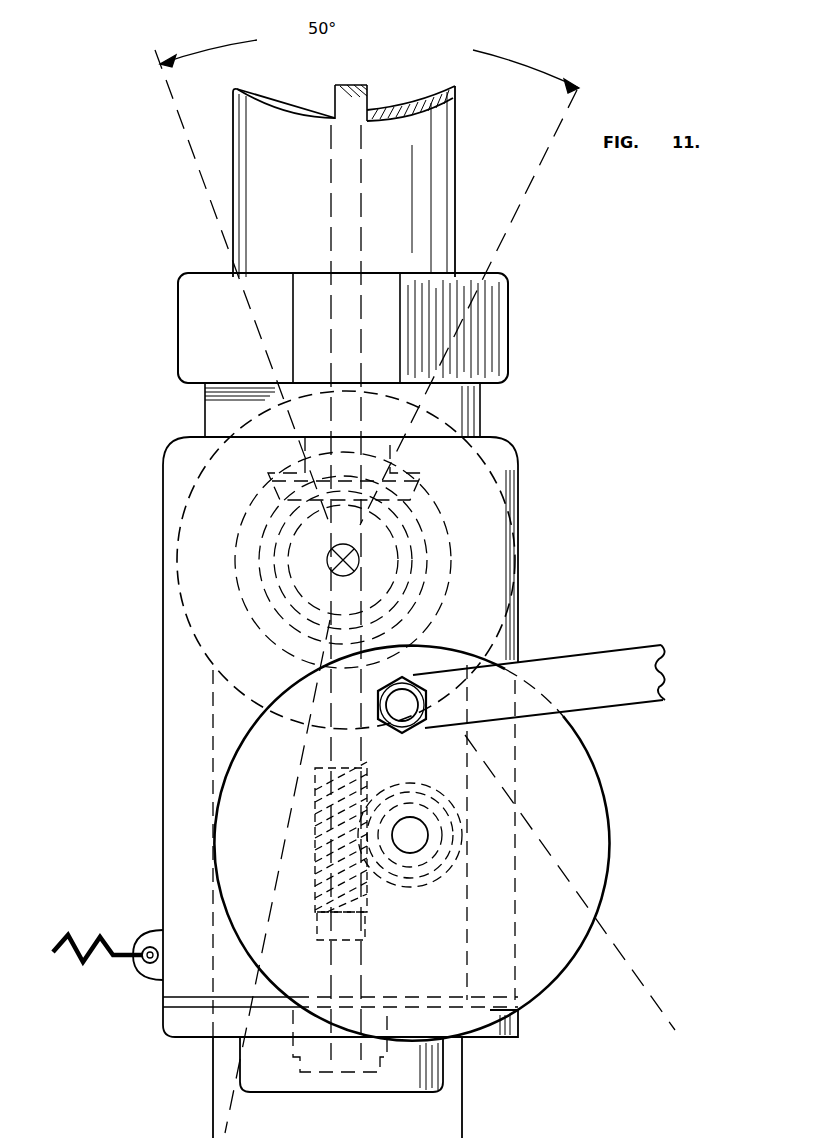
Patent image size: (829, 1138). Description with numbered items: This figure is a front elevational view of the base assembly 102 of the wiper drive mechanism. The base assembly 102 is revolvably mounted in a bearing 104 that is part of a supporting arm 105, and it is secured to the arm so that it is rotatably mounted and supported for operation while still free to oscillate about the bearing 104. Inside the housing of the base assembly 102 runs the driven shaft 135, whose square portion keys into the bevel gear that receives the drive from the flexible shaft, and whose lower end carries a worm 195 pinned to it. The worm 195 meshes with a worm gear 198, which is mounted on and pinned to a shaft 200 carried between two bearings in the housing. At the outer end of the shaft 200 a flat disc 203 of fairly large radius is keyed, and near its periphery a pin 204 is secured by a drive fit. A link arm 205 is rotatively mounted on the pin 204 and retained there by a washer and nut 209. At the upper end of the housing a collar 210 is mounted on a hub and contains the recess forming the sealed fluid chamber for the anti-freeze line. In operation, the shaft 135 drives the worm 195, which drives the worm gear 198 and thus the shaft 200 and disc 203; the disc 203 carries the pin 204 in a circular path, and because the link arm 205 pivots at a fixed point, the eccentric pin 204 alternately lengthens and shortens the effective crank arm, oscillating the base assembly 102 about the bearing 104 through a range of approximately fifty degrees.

The base assembly 102 is at (140, 417).
The bearing 104 is at (176, 538).
The supporting arm 105 is at (213, 1118).
The shaft 135 is at (335, 98).
The worm 195 is at (315, 840).
The worm gear 198 is at (446, 835).
The shaft 200 is at (410, 853).
The flat disc 203 is at (590, 883).
The pin 204 is at (398, 688).
The link arm 205 is at (627, 658).
The washer and nut 209 is at (415, 729).
The collar 210 is at (97, 940).